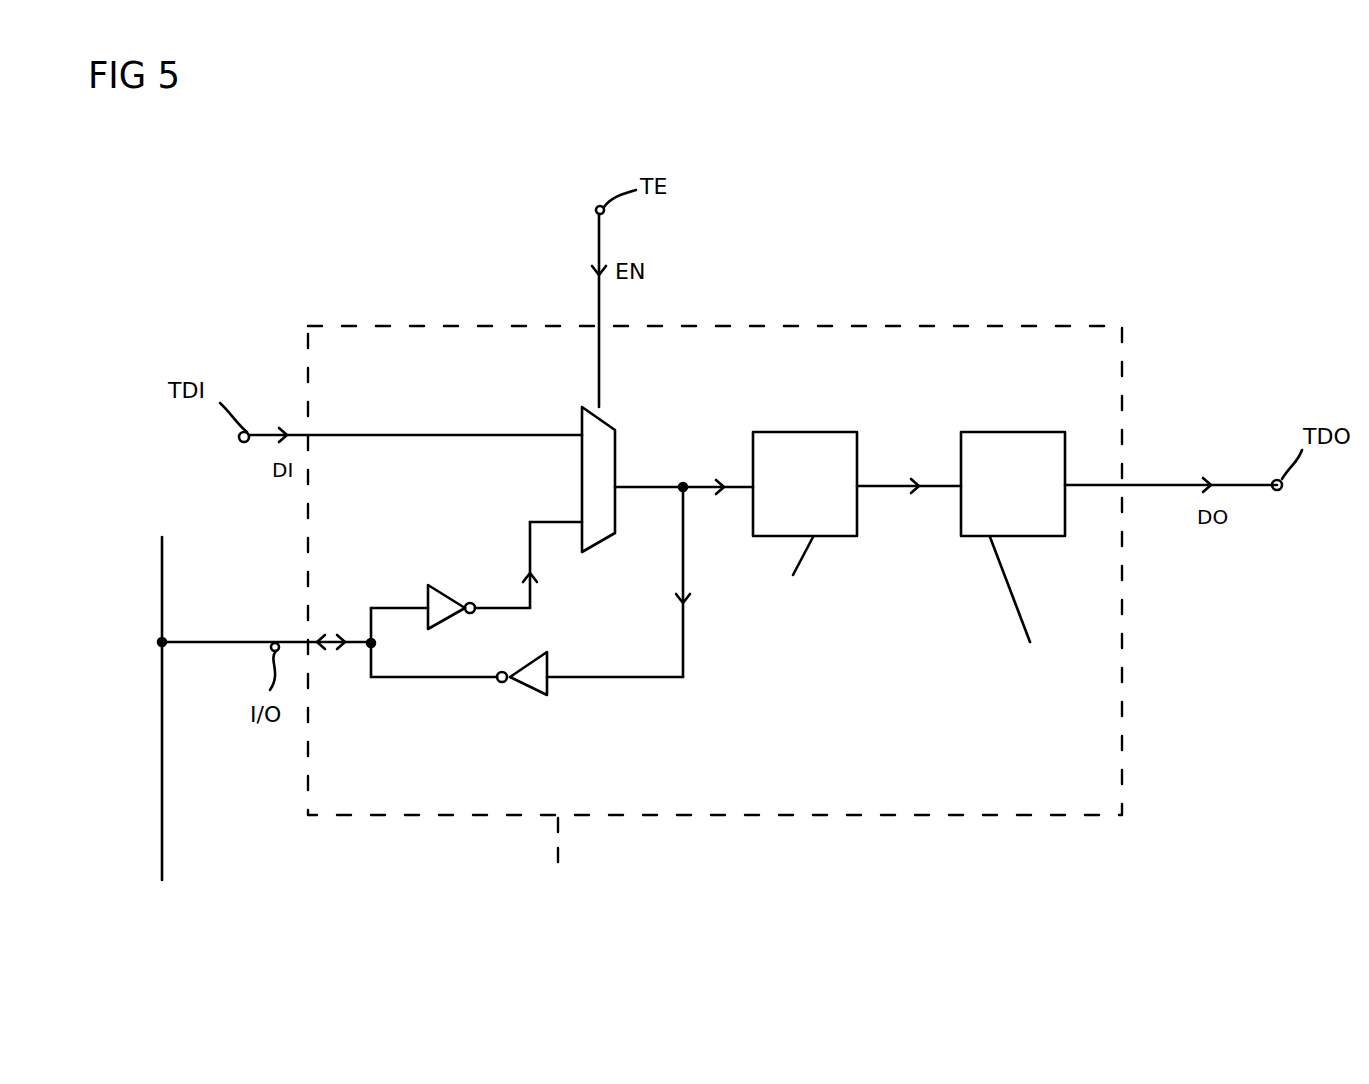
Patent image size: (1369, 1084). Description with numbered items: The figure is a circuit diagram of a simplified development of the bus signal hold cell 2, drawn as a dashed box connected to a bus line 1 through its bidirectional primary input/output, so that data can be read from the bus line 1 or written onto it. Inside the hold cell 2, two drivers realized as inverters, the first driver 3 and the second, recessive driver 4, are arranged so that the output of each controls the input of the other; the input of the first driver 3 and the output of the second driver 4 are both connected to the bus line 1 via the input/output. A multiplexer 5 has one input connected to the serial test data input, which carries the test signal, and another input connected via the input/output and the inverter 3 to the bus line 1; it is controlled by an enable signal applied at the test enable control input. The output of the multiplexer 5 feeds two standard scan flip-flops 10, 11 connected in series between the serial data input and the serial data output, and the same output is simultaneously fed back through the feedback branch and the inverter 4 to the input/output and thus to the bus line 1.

The bus line 1 is at (164, 866).
The bus signal hold cell 2 is at (965, 323).
The first driver 3 is at (437, 588).
The second driver 4 is at (547, 690).
The multiplexer configuration 5 is at (615, 445).
The first scan flip-flop 10 is at (800, 432).
The second scan flip-flop 11 is at (1000, 432).